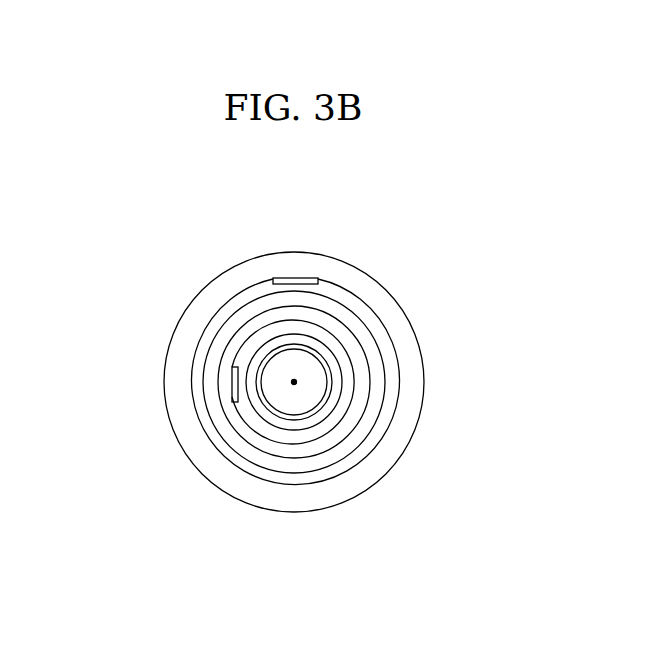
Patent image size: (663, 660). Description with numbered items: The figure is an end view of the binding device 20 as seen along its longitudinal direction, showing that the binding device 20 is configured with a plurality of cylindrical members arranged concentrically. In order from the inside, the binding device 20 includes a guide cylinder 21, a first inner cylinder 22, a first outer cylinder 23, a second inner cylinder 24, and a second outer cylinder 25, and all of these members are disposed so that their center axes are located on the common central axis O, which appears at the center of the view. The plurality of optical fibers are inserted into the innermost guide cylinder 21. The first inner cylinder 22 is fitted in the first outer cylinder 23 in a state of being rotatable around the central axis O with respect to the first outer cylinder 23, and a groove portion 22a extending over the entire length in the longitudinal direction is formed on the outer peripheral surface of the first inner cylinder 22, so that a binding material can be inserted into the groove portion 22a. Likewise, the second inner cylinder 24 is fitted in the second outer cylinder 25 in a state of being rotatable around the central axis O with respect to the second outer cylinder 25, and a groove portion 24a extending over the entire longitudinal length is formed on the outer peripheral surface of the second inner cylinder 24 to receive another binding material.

The binding device 20 is at (378, 249).
The guide cylinder 21 is at (319, 357).
The first inner cylinder 22 is at (353, 361).
The groove portion 22a is at (232, 375).
The first outer cylinder 23 is at (368, 377).
The second inner cylinder 24 is at (392, 405).
The groove portion 24a is at (282, 279).
The second outer cylinder 25 is at (403, 445).
The central axis O is at (294, 382).